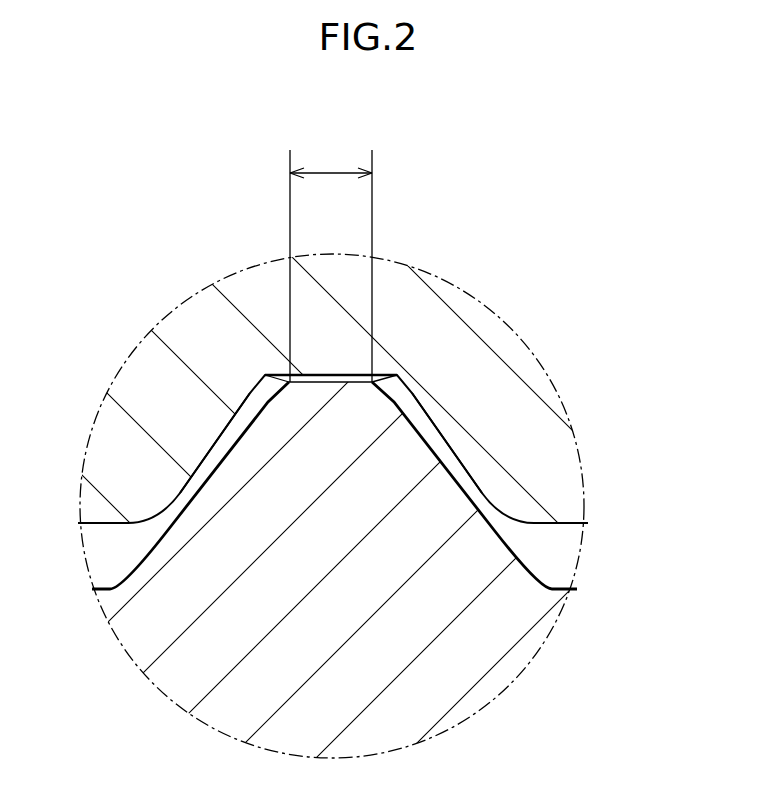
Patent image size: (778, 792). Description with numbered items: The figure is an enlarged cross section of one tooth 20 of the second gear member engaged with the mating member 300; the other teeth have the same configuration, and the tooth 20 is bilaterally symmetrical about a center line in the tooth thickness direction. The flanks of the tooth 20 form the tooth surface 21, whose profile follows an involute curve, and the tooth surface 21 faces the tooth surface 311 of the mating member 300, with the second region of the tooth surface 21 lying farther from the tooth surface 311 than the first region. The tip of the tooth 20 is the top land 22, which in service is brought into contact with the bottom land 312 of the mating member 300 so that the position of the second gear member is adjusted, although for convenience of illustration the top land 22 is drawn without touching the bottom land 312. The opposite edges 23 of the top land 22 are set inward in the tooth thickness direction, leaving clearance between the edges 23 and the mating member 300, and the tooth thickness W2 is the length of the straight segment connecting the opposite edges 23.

The tooth 20 is at (228, 441).
The tooth surface 21 is at (208, 455).
The top land 22 is at (333, 375).
The opposite edges of the top land 23 is at (287, 380).
The mating member 300 is at (530, 354).
The tooth surface of the mating member 311 is at (476, 508).
The bottom land of the mating member 312 is at (300, 383).
The tooth thickness at the top land W2 is at (331, 266).